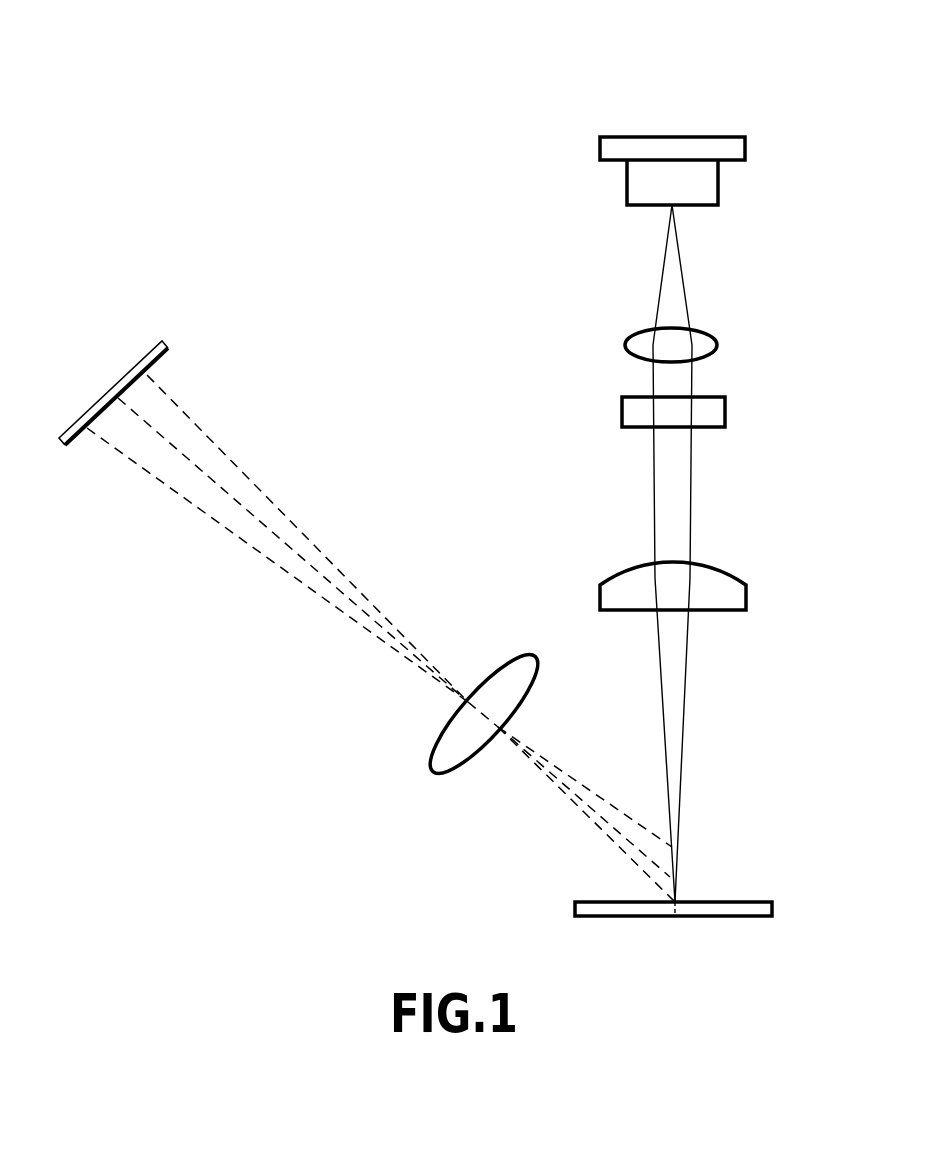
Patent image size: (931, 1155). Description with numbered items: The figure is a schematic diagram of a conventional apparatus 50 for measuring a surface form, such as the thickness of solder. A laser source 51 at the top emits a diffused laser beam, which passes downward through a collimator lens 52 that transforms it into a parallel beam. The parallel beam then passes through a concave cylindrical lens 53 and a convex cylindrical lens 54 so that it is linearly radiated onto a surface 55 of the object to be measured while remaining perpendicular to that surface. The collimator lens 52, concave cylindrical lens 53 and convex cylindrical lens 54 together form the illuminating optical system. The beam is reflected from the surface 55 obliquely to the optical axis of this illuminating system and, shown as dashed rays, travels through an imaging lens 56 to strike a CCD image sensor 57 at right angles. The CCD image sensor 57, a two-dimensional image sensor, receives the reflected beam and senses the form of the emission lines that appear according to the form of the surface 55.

The apparatus for measuring a surface form 50 is at (622, 120).
The laser source 51 is at (718, 188).
The collimator lens 52 is at (717, 340).
The concave cylindrical lens 53 is at (725, 415).
The convex cylindrical lens 54 is at (727, 573).
The surface of an object to be measured 55 is at (752, 900).
The imaging lens 56 is at (512, 657).
The CCD image sensor 57 is at (168, 342).